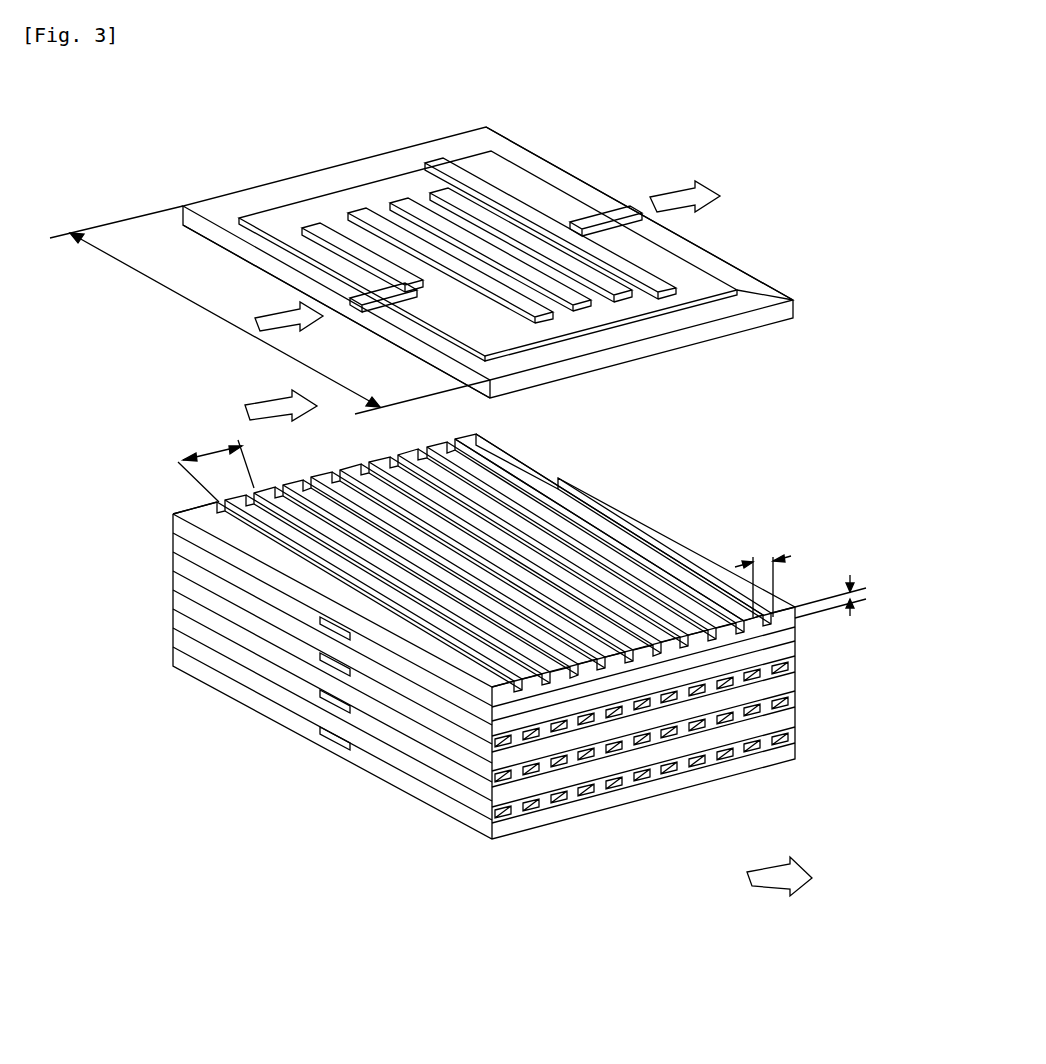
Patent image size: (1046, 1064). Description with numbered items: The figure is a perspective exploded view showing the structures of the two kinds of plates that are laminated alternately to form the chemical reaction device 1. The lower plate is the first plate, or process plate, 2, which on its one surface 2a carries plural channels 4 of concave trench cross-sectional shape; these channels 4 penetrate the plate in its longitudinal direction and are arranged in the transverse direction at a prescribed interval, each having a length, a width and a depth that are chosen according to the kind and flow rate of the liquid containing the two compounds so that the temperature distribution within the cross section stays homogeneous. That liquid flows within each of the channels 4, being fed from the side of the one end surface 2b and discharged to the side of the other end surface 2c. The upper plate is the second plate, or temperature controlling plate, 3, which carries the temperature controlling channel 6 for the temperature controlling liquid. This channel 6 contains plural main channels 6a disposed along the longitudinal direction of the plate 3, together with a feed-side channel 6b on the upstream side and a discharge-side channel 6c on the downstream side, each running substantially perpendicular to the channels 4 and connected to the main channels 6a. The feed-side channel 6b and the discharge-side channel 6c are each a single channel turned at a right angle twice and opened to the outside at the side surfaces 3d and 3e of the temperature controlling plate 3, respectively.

The chemical reaction device 1 is at (480, 666).
The first plate (process plate) 2 is at (789, 601).
The surface of first plate 2a is at (695, 550).
The end surface of first plate 2b is at (174, 514).
The end surface of first plate 2c is at (797, 637).
The second plate (temperature controlling plate) 3 is at (796, 303).
The side surface of second plate 3d is at (448, 372).
The side surface of second plate 3e is at (756, 267).
The channel having concave trench cross-sectional shape 4 is at (660, 582).
The temperature controlling channel 6 is at (488, 451).
The main channel 6a is at (512, 268).
The feed-side channel 6b is at (426, 162).
The discharge-side channel 6c is at (582, 222).